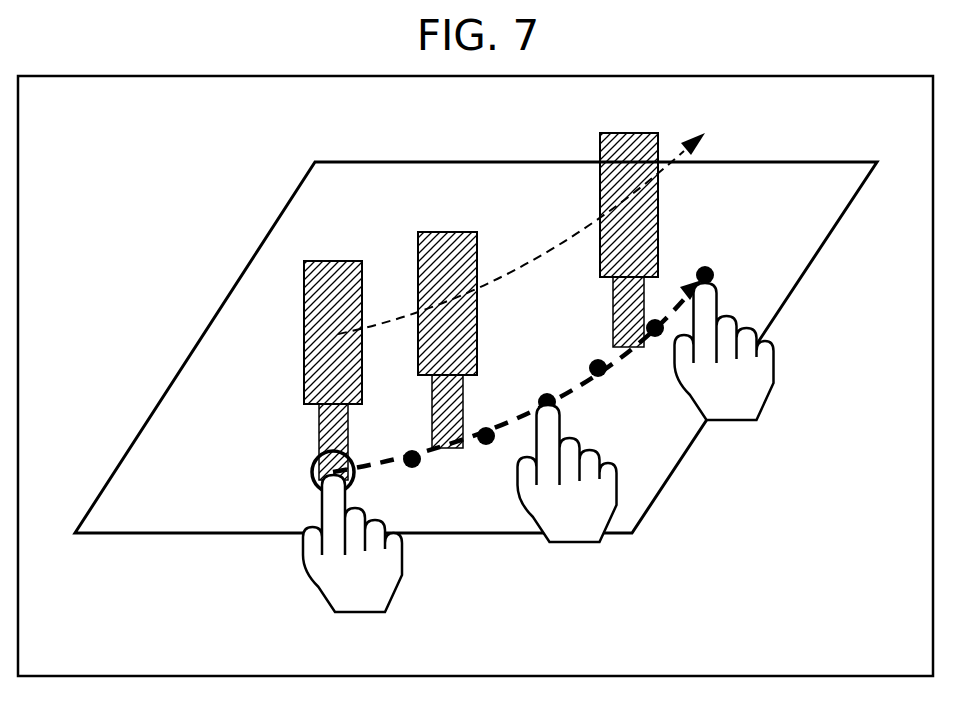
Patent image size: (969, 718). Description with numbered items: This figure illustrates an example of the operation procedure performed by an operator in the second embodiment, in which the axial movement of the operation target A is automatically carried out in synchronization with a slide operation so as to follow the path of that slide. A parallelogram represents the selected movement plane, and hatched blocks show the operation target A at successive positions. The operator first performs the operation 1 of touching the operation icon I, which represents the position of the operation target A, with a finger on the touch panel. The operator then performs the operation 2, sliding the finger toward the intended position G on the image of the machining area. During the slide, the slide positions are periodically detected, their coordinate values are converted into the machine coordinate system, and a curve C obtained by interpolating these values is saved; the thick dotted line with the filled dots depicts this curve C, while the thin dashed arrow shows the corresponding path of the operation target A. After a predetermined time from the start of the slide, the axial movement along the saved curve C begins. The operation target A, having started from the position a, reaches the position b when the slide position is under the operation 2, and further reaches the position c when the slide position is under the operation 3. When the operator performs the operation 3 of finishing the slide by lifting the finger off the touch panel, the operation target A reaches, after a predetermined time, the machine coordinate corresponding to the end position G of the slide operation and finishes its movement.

The operation target A is at (304, 328).
The curve C is at (575, 387).
The intended position (end position of the slide operation) G is at (713, 268).
The operation icon I is at (314, 467).
The position a is at (333, 352).
The position b is at (447, 322).
The position c is at (629, 221).
The operation 1 is at (352, 560).
The operation 2 is at (567, 490).
The operation 3 is at (724, 365).